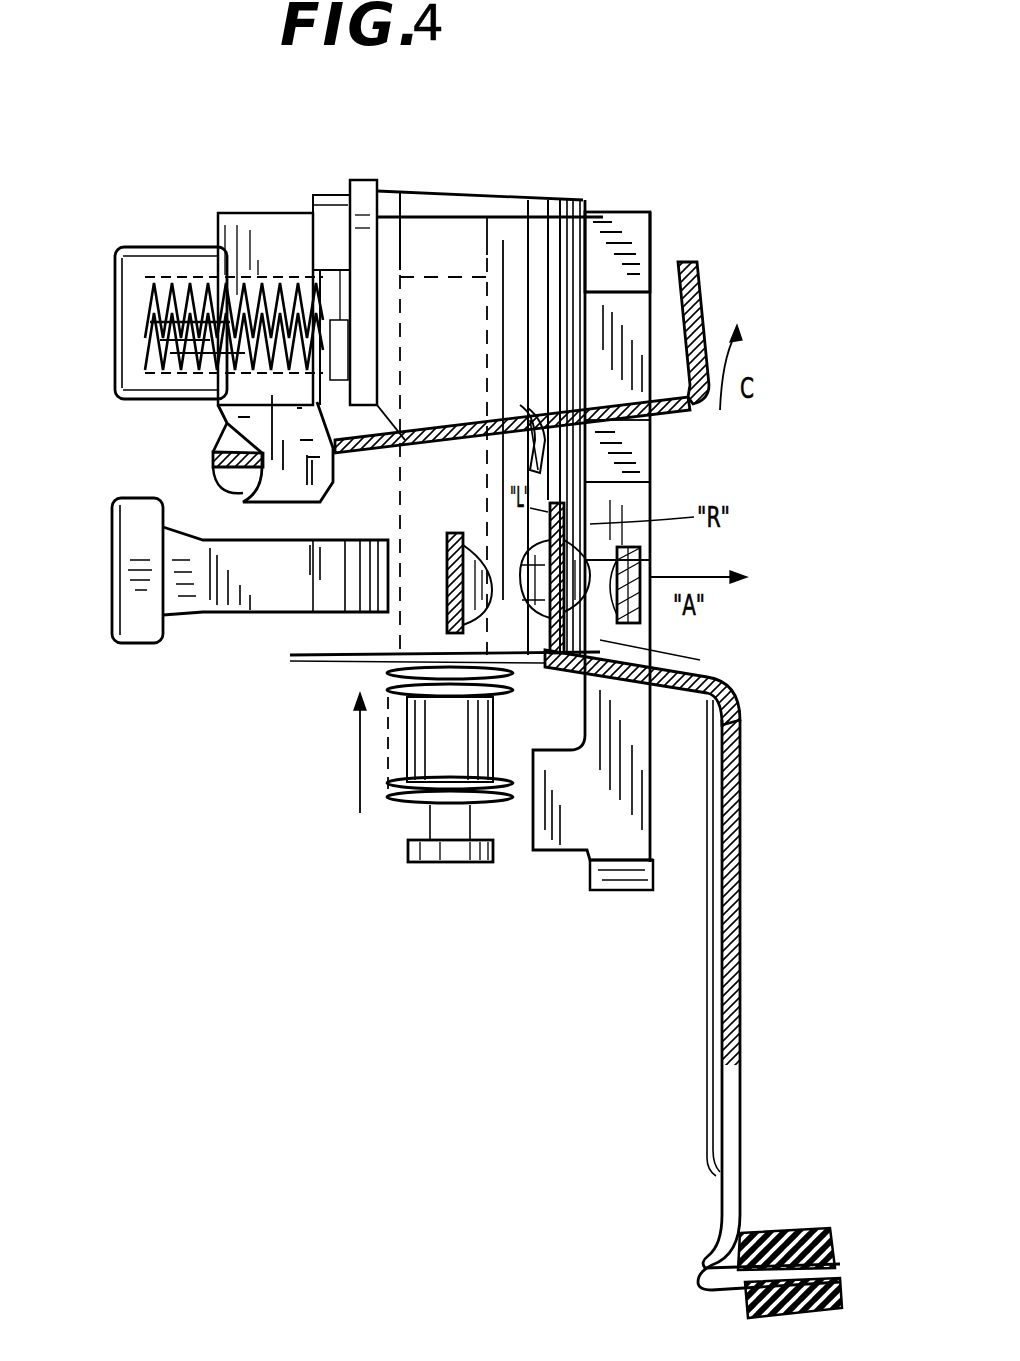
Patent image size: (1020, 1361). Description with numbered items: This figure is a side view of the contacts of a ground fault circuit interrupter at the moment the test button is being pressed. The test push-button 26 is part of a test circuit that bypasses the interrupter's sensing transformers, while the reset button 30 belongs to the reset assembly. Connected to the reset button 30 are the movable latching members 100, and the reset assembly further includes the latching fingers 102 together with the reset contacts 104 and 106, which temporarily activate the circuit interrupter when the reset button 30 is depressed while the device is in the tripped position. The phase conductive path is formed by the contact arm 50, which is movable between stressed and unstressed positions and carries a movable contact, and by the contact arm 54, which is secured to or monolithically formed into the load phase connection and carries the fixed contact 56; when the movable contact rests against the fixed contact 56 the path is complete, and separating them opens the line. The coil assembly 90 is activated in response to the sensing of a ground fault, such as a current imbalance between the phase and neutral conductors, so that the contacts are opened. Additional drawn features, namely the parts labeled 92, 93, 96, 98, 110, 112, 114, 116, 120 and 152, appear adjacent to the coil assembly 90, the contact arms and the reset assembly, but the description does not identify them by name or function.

The push-button 26 is at (112, 540).
The reset button 30 is at (112, 268).
The contact arm 50 is at (743, 923).
The contact arm 54 is at (392, 652).
The fixed contact 56 is at (490, 548).
The coil assembly 90 is at (460, 260).
The spool 92 is at (487, 725).
The pin 93 is at (387, 807).
The upper block 96 is at (632, 242).
The lower block 98 is at (637, 440).
The movable latching members 100 is at (700, 300).
The latching fingers 102 is at (500, 422).
The reset contact 104 is at (728, 663).
The reset contact 106 is at (648, 612).
The clip 110 is at (287, 507).
The clip tab 112 is at (247, 488).
The clip edge 114 is at (243, 503).
The block 116 is at (590, 500).
The spring 120 is at (115, 350).
The bracket leg 152 is at (528, 592).